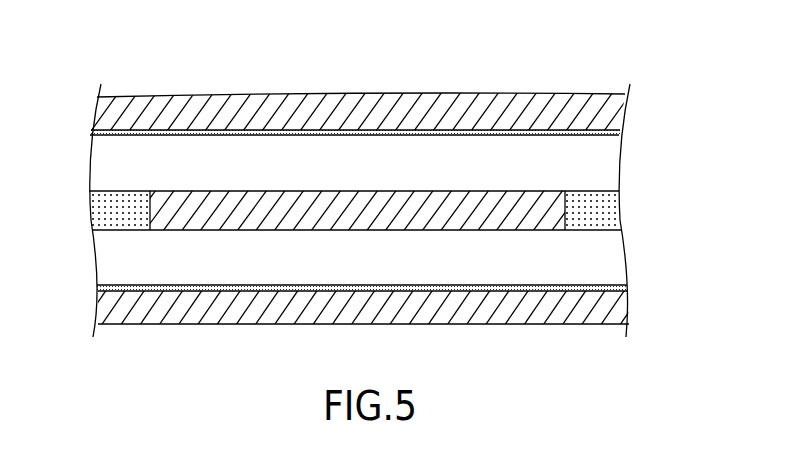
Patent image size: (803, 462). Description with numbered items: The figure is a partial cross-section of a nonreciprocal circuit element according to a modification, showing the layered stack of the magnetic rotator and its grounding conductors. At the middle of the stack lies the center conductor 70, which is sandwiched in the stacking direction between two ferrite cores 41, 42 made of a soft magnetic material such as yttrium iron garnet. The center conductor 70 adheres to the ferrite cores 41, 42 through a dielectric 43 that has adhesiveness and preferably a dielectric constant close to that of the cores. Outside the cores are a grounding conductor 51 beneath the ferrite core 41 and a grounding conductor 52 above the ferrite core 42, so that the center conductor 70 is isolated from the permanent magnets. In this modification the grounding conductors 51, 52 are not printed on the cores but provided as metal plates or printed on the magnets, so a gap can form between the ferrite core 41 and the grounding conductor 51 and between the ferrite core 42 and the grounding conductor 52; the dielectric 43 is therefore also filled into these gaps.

The ferrite core 41 is at (610, 260).
The ferrite core 42 is at (610, 161).
The dielectric 43 is at (491, 130).
The grounding conductor 51 is at (613, 301).
The grounding conductor 52 is at (612, 114).
The center conductor 70 is at (480, 191).